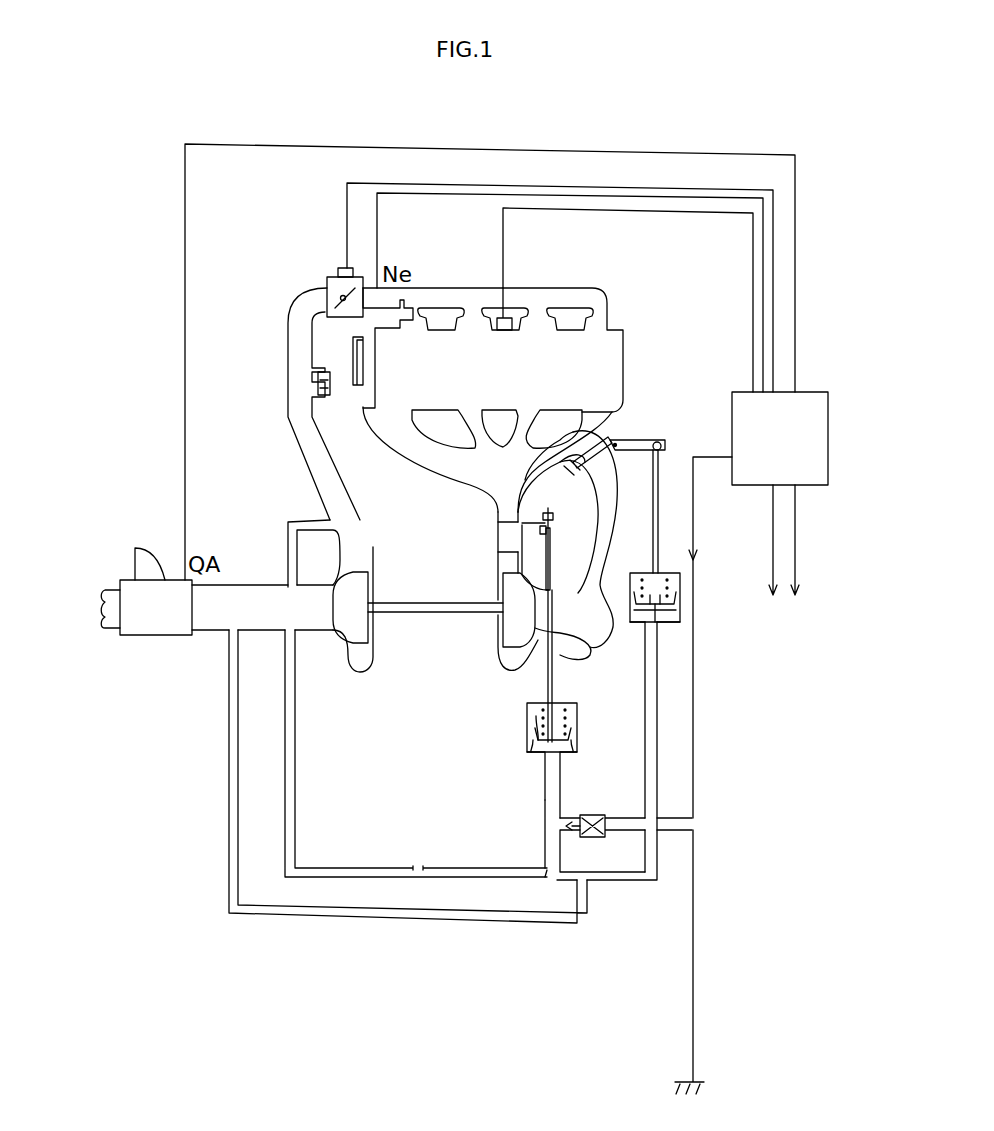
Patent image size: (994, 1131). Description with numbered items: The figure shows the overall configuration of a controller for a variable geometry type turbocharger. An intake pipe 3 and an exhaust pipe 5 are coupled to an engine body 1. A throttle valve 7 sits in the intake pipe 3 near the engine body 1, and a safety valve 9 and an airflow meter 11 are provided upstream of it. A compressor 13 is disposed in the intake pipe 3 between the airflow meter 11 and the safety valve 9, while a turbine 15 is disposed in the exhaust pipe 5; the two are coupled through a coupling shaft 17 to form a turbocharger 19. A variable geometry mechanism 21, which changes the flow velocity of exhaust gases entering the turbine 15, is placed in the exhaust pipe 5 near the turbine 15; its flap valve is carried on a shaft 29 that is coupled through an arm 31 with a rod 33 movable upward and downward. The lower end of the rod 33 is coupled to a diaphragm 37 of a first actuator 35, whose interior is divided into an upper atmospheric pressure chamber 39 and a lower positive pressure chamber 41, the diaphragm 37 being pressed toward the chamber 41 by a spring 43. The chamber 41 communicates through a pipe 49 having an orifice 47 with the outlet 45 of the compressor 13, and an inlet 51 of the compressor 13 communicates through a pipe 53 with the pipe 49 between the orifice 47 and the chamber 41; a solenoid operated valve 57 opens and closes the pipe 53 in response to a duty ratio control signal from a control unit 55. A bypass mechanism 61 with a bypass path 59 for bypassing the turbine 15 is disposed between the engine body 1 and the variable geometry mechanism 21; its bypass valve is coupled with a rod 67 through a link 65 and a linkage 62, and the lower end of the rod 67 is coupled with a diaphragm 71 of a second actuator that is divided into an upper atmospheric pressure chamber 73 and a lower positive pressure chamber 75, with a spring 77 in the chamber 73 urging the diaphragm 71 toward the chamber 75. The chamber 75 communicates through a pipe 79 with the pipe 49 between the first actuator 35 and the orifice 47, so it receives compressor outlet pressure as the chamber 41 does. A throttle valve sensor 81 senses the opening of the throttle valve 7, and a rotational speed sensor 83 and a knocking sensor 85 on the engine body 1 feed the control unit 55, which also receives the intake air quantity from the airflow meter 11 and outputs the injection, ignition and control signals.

The engine body 1 is at (624, 330).
The intake pipe 3 is at (318, 462).
The exhaust pipe 5 is at (483, 462).
The throttle valve 7 is at (332, 302).
The safety valve 9 is at (330, 385).
The airflow meter 11 is at (160, 627).
The compressor 13 is at (362, 648).
The turbine 15 is at (500, 636).
The coupling shaft 17 is at (415, 618).
The turbocharger 19 is at (455, 624).
The variable geometry mechanism 21 is at (494, 550).
The shaft 29 is at (545, 518).
The arm 31 is at (548, 538).
The rod 33 is at (555, 650).
The first actuator 35 is at (588, 752).
The diaphragm 37 is at (535, 756).
The atmospheric pressure chamber 39 is at (575, 715).
The positive pressure chamber 41 is at (578, 748).
The spring 43 is at (538, 718).
The outlet 45 is at (372, 548).
The orifice 47 is at (418, 865).
The pipe 49 is at (545, 798).
The inlet 51 is at (307, 630).
The pipe 53 is at (442, 922).
The control unit 55 is at (506, 619).
The solenoid operated valve 57 is at (592, 838).
The bypass path 59 is at (617, 518).
The bypass mechanism 61 is at (655, 422).
The link 62 is at (583, 456).
The link 65 is at (632, 440).
The rod 67 is at (660, 495).
The diaphragm 71 is at (677, 618).
The atmospheric pressure chamber 73 is at (675, 580).
The positive pressure chamber 75 is at (660, 613).
The spring 77 is at (668, 590).
The pipe 79 is at (660, 728).
The throttle valve sensor 81 is at (345, 265).
The rotational speed sensor 83 is at (362, 342).
The knocking sensor 85 is at (508, 318).